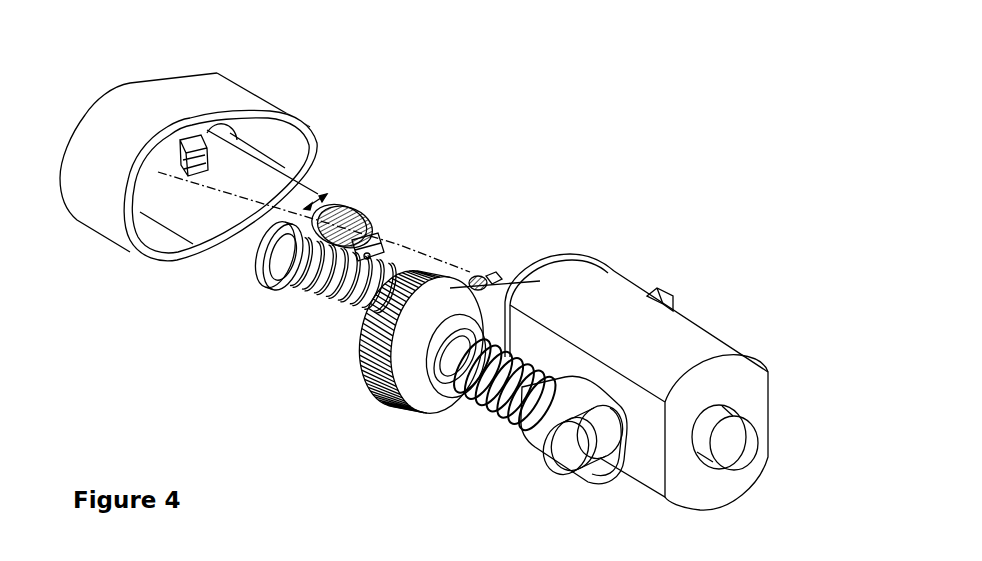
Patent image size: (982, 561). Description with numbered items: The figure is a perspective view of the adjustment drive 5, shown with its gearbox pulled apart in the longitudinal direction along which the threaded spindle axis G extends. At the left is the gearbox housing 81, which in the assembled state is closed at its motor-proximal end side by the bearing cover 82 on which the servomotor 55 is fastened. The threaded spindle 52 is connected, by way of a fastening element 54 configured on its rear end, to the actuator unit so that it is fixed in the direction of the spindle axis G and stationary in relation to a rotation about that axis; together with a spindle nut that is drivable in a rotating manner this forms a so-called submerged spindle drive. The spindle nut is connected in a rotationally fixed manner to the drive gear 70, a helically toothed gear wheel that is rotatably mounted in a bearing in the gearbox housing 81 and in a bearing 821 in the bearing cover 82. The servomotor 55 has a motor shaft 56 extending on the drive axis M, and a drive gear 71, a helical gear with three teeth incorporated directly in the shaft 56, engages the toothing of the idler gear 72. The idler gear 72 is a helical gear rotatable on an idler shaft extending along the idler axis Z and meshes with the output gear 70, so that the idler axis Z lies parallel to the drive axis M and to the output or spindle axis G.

The adjustment drive 5 is at (527, 132).
The threaded spindle 52 is at (323, 290).
The fastening element 54 is at (577, 463).
The servomotor 55 is at (685, 333).
The motor shaft 56 is at (472, 275).
The drive gear 70 is at (363, 367).
The drive gear 71 is at (494, 277).
The idler gear 72 is at (357, 213).
The gearbox housing 81 is at (197, 97).
The bearing cover 82 is at (475, 306).
The bearing 821 is at (435, 380).
The idler axis Z is at (258, 186).
The drive axis M is at (817, 493).
The threaded spindle axis G is at (213, 207).